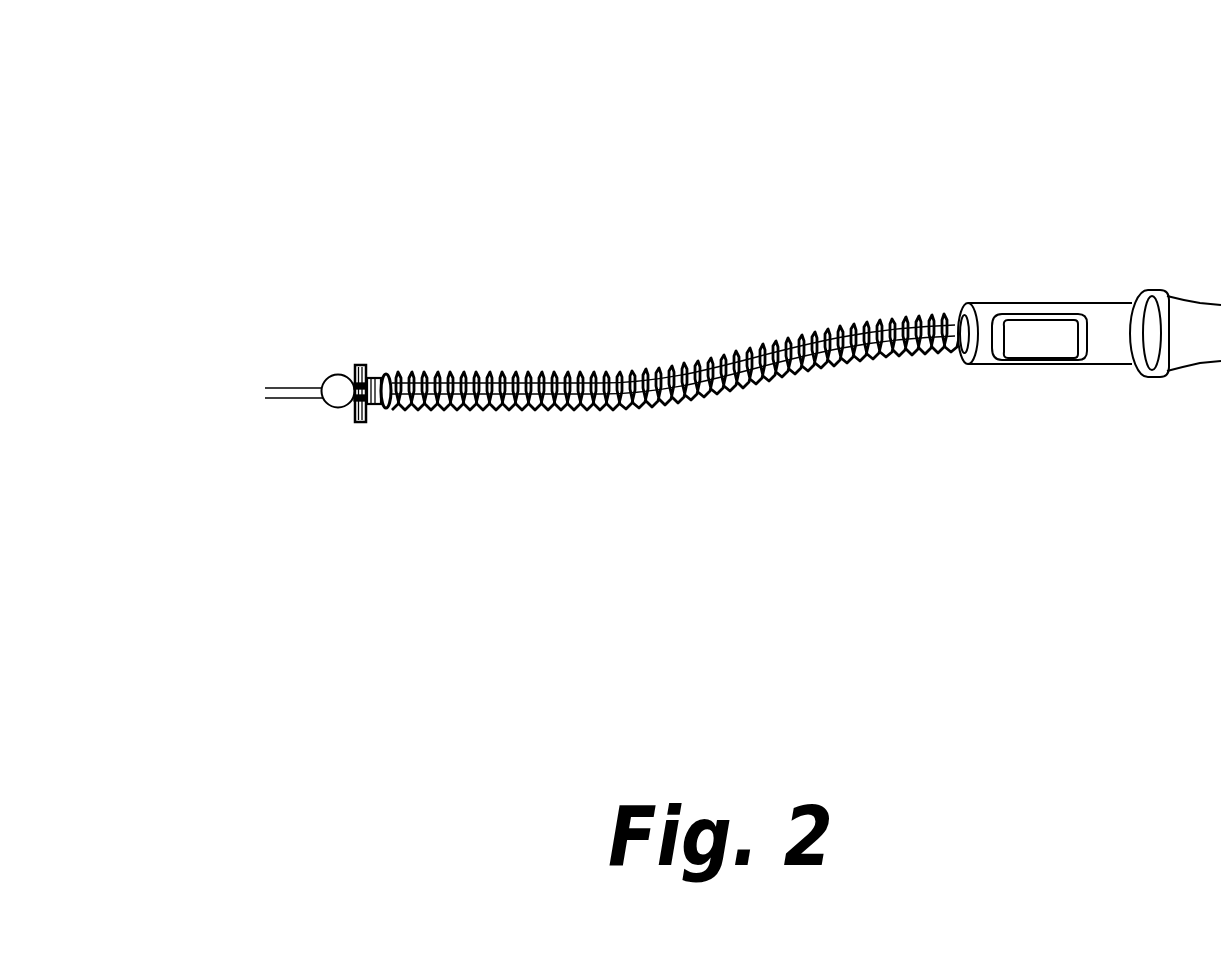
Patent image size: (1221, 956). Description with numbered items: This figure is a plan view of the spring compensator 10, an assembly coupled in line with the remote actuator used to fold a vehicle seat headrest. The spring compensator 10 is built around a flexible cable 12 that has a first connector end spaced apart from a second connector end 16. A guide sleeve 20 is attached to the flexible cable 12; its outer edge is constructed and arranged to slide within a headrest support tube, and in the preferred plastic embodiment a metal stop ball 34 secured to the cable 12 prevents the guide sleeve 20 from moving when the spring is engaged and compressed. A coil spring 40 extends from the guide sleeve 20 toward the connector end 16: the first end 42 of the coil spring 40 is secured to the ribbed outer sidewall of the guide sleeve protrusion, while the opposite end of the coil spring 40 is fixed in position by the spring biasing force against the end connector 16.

The spring compensator 10 is at (597, 147).
The flexible cable 12 is at (275, 388).
The stop ball 34 is at (322, 400).
The guide sleeve 20 is at (362, 360).
The first end of the coil spring 42 is at (409, 378).
The coil spring 40 is at (616, 377).
The second connector end 16 is at (1057, 297).